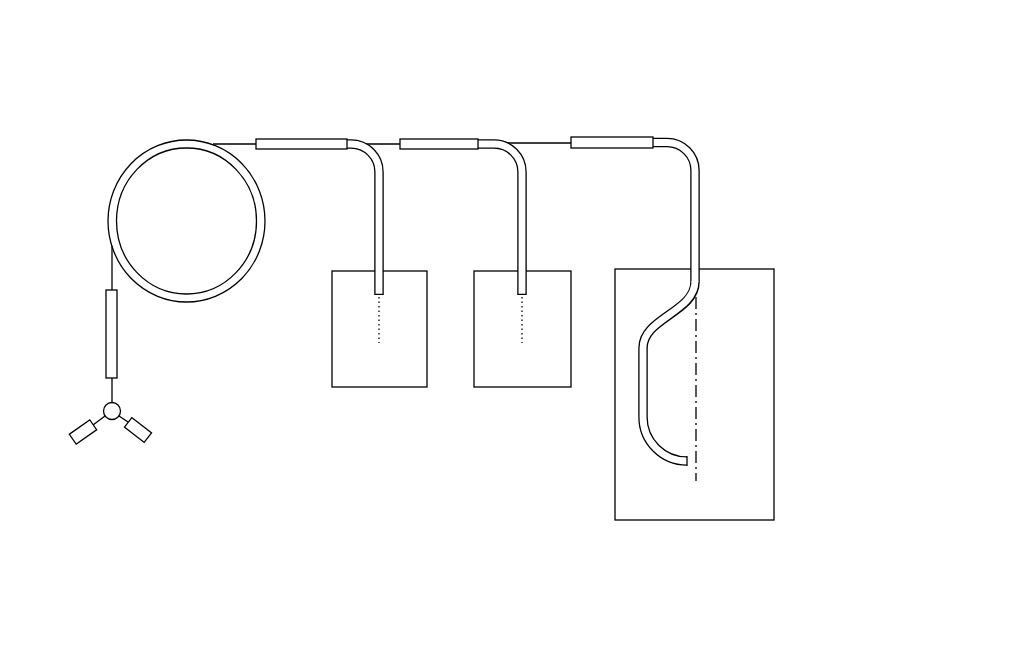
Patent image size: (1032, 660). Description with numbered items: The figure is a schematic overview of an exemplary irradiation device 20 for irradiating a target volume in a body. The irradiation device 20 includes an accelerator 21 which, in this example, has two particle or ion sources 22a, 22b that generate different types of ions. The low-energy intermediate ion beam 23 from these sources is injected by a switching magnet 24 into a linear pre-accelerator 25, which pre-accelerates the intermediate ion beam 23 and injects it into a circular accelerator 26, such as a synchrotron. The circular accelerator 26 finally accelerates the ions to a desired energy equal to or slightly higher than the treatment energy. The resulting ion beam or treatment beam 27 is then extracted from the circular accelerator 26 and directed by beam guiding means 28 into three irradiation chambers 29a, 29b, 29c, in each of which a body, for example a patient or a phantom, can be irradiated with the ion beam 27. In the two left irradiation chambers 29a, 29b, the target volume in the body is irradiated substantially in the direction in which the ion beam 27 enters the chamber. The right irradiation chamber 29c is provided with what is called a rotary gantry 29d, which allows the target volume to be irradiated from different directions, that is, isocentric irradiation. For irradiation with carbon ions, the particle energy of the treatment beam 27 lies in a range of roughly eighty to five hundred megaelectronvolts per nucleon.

The irradiation device 20 is at (748, 171).
The accelerator 21 is at (250, 394).
The particle or ion source 22a is at (92, 438).
The particle or ion source 22b is at (150, 438).
The low-energy intermediate ion beam 23 is at (94, 416).
The switching magnet 24 is at (122, 405).
The linear pre-accelerator 25 is at (118, 333).
The circular accelerator 26 is at (142, 152).
The ion beam or treatment beam 27 is at (232, 140).
The beam guiding means 28 is at (290, 139).
The irradiation chamber 29a is at (377, 390).
The irradiation chamber 29b is at (520, 390).
The irradiation chamber 29c is at (695, 522).
The rotary gantry 29d is at (637, 391).